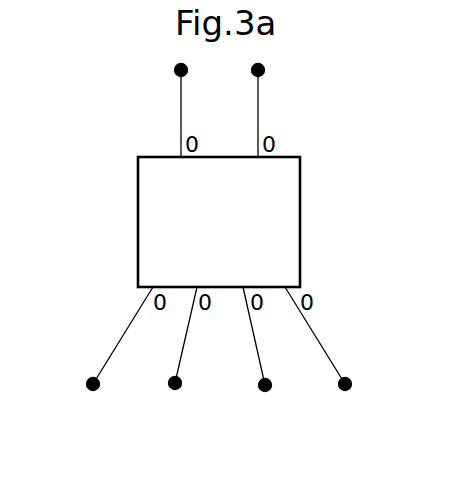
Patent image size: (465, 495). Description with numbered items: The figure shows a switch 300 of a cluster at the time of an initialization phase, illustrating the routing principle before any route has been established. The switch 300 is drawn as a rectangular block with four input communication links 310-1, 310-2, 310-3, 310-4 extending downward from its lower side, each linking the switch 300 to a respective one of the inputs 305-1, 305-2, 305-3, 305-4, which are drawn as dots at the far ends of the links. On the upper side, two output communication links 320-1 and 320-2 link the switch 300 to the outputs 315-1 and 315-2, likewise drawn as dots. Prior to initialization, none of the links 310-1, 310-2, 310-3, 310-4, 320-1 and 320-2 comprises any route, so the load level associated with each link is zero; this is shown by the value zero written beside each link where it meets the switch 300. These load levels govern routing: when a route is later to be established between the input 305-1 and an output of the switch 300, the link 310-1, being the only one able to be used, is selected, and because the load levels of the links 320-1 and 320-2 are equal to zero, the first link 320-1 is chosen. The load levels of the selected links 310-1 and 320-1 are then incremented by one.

The switch 300 is at (199, 236).
The input 305-1 is at (93, 384).
The input 305-2 is at (175, 383).
The input 305-3 is at (265, 385).
The input 305-4 is at (345, 385).
The input communication link 310-1 is at (126, 331).
The input communication link 310-2 is at (183, 348).
The input communication link 310-3 is at (259, 360).
The input communication link 310-4 is at (316, 337).
The output 315-1 is at (181, 70).
The output 315-2 is at (258, 70).
The output communication link 320-1 is at (181, 100).
The output communication link 320-2 is at (258, 100).